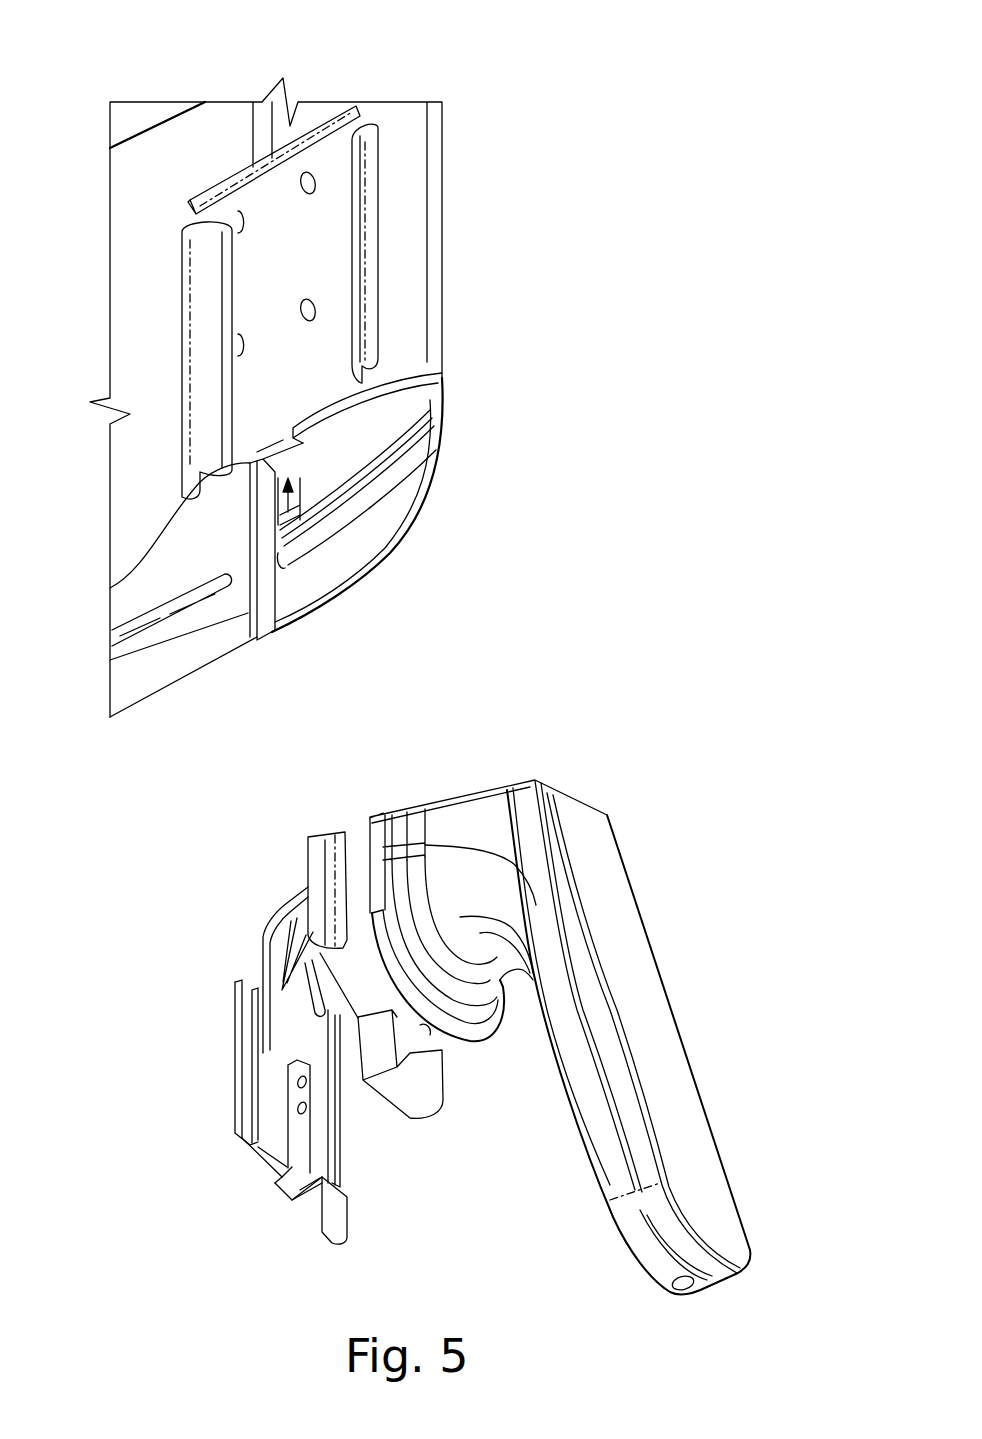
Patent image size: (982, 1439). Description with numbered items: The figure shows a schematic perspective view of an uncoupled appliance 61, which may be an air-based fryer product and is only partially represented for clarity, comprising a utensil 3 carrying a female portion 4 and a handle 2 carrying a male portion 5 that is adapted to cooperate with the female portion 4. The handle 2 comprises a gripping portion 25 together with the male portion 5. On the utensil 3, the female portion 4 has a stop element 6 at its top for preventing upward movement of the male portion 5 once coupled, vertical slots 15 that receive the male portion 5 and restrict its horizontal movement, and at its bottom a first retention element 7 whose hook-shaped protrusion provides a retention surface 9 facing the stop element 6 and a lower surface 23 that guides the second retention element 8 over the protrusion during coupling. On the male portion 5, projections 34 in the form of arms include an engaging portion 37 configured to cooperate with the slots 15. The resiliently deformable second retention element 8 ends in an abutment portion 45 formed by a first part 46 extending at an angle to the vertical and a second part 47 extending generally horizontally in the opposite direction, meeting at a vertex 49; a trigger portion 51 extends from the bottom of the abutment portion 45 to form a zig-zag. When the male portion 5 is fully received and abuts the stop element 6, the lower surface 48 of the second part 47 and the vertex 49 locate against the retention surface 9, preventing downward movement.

The handle 2 is at (643, 845).
The utensil 3 is at (422, 145).
The female portion 4 is at (337, 232).
The male portion 5 is at (275, 1013).
The stop element 6 is at (212, 196).
The first retention element 7 is at (110, 588).
The second retention element 8 is at (307, 1122).
The retention surface 9 is at (405, 362).
The slot 15 is at (353, 120).
The lower surface 23 is at (294, 515).
The gripping portion 25 is at (684, 1091).
The projection 34 is at (243, 1060).
The engaging portion 37 is at (238, 1096).
The abutment portion 45 is at (343, 1168).
The first part 46 is at (275, 1177).
The second part 47 is at (316, 1200).
The lower surface 48 is at (292, 1198).
The vertex 49 is at (276, 1184).
The trigger portion 51 is at (345, 1240).
The appliance 61 is at (474, 74).